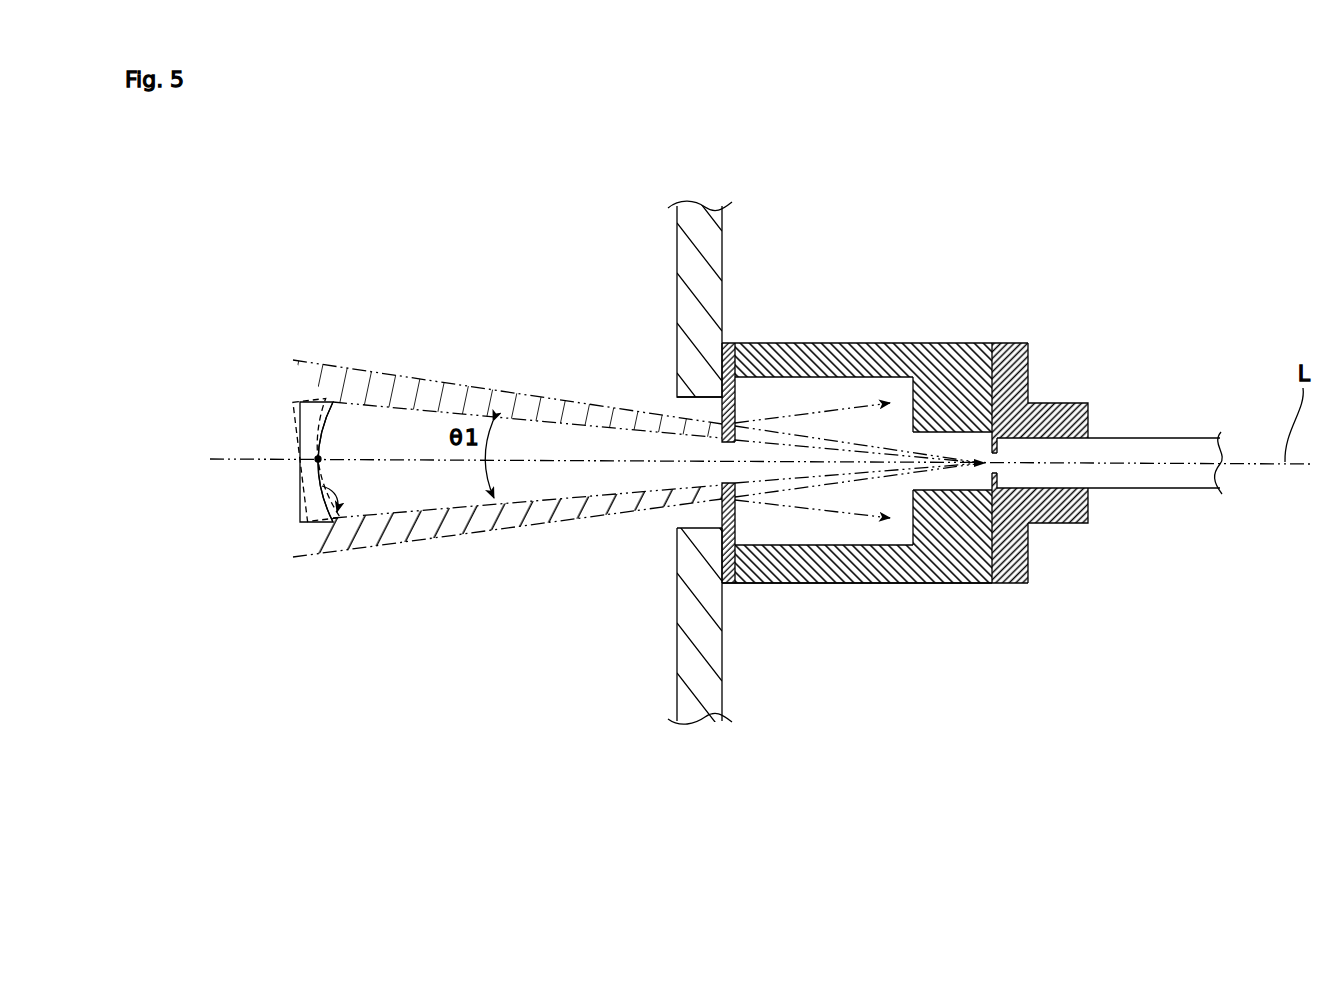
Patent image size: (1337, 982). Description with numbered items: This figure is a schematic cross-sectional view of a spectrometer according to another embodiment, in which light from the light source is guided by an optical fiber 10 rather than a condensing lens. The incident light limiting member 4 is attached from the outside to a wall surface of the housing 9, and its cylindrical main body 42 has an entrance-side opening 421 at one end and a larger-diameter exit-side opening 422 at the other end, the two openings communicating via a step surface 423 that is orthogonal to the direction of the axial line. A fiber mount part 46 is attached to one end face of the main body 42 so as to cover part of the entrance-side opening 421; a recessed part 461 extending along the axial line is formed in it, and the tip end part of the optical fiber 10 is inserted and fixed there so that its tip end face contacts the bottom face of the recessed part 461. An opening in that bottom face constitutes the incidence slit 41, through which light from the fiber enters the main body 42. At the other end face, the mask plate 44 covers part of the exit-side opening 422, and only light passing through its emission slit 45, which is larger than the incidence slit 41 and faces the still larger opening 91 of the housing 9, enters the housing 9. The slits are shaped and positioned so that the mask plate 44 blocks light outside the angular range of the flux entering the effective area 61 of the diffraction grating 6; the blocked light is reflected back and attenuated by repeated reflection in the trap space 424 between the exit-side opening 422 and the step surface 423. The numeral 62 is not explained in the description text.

The incident light limiting member 4 is at (946, 342).
The diffraction grating 6 is at (300, 418).
The housing 9 is at (677, 248).
The optical fiber 10 is at (1152, 437).
The incidence slit 41 is at (1003, 469).
The main body 42 is at (848, 343).
The mask plate 44 is at (722, 410).
The emission slit 45 is at (722, 482).
The fiber mount part 46 is at (1020, 343).
The effective area 61 is at (340, 496).
The lens center 62 is at (320, 458).
The opening 91 is at (678, 528).
The entrance-side opening 421 is at (970, 478).
The exit-side opening 422 is at (745, 540).
The step surface 423 is at (913, 527).
The trap space 424 is at (818, 530).
The recessed part 461 is at (1056, 442).